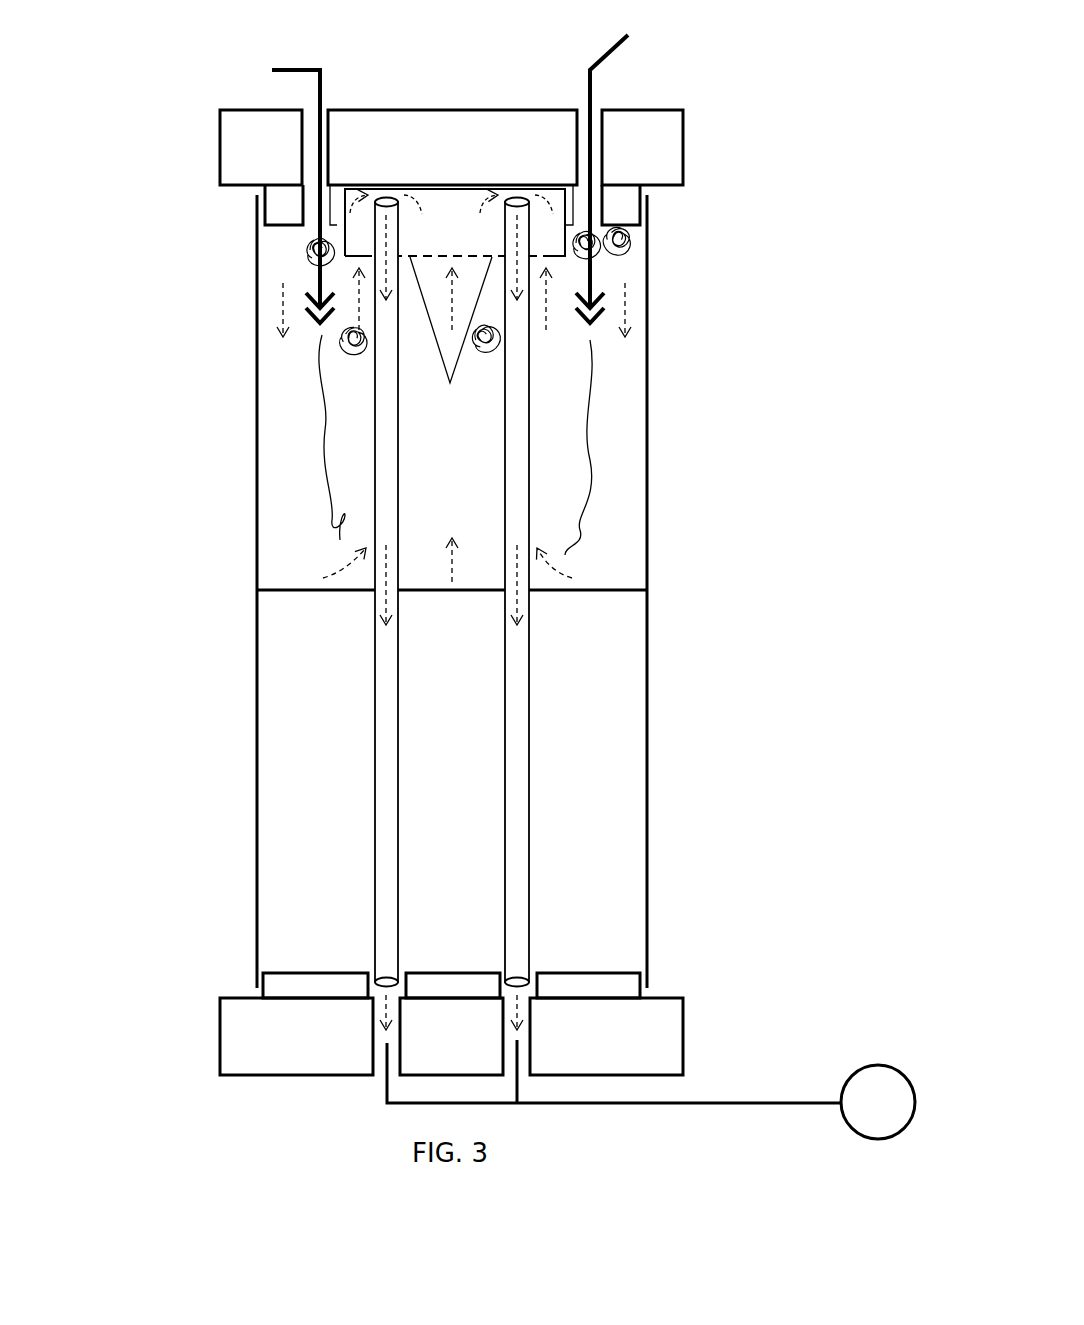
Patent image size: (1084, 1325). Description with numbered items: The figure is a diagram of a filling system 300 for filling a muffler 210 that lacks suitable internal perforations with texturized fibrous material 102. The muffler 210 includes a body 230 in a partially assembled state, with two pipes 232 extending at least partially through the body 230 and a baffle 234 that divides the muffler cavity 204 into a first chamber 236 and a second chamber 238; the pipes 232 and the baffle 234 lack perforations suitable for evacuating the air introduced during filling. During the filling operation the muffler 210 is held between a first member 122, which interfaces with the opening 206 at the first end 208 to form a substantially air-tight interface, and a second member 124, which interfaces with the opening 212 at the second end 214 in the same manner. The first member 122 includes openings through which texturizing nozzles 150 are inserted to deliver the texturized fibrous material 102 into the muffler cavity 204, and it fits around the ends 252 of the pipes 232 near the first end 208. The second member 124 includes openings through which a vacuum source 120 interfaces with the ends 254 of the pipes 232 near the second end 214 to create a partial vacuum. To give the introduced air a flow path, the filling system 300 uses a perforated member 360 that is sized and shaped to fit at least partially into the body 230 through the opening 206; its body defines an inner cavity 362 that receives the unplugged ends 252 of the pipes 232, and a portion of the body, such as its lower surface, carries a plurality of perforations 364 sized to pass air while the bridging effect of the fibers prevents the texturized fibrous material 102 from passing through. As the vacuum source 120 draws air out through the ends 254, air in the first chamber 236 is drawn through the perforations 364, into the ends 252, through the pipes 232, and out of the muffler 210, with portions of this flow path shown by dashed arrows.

The filling system 300 is at (82, 112).
The texturizing nozzles 150 is at (296, 68).
The first member 122 is at (683, 110).
The ends of the pipes 252 is at (514, 198).
The opening 206 is at (242, 196).
The texturized fibrous material 102 is at (330, 248).
The inner cavity 362 is at (435, 232).
The perforations 364 is at (451, 335).
The first end 208 is at (648, 236).
The perforated member 360 is at (585, 292).
The muffler cavity 204 is at (636, 400).
The muffler 210 is at (112, 545).
The first chamber 236 is at (435, 464).
The baffle 234 is at (263, 592).
The pipes 232 is at (375, 730).
The body 230 is at (648, 702).
The second chamber 238 is at (435, 829).
The second end 214 is at (256, 955).
The ends of the pipes 254 is at (387, 975).
The opening 212 is at (660, 988).
The second member 124 is at (220, 1015).
The vacuum source 120 is at (875, 1064).